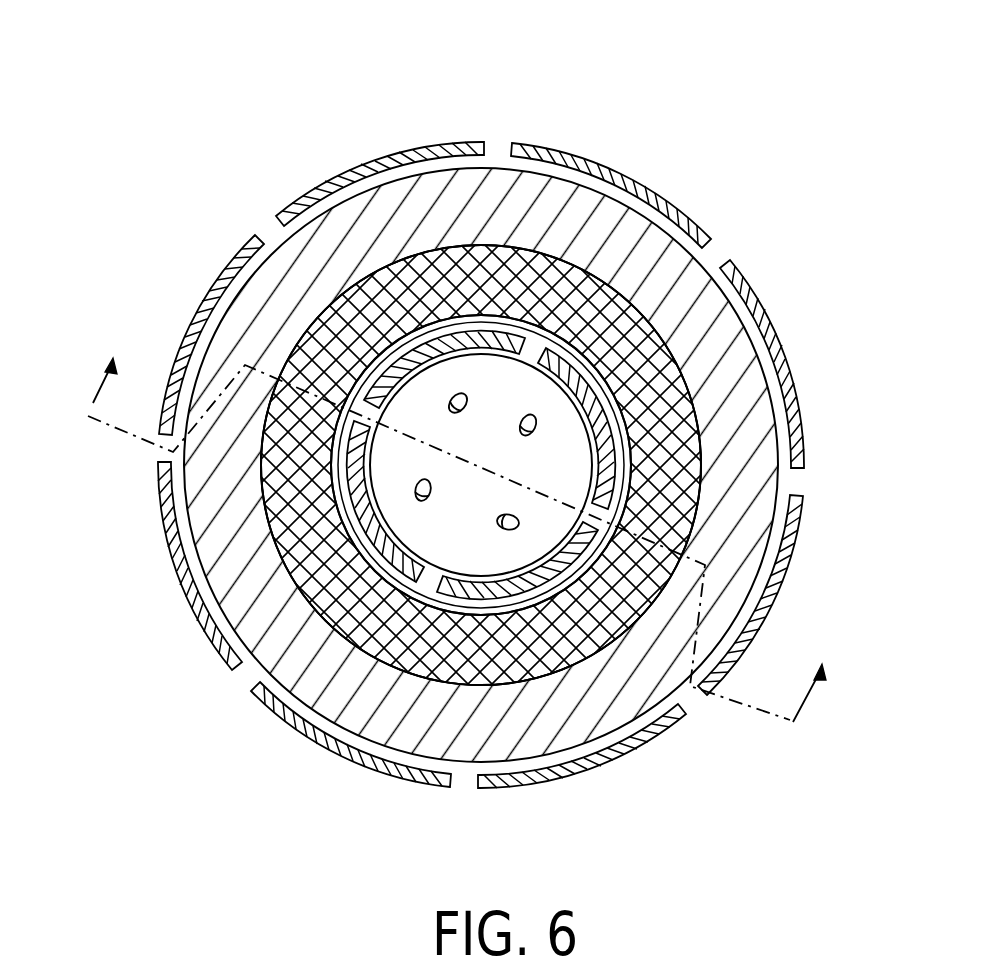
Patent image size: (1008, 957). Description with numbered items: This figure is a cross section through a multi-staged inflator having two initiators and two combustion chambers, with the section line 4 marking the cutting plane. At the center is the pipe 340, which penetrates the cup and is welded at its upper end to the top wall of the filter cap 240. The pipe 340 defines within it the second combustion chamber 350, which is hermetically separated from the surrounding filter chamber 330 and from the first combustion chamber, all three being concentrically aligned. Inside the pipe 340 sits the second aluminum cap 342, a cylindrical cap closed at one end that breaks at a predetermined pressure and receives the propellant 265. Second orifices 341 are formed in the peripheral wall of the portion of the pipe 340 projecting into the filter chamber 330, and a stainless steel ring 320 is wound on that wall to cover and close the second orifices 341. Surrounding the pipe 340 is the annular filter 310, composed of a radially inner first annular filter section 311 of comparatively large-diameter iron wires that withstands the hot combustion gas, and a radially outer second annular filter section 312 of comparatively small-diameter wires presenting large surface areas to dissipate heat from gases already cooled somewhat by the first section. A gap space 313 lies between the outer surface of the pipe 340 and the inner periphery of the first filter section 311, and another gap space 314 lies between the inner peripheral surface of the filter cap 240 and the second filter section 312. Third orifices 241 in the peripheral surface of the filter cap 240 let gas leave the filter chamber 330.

The section line 4- 4 is at (466, 518).
The filter cap 240 is at (220, 277).
The third orifices 241 is at (720, 255).
The propellant 265 is at (543, 418).
The filter 310 is at (665, 64).
The first annular filter section 311 is at (583, 278).
The second annular filter section 312 is at (520, 182).
The gap space 313 is at (700, 493).
The gap space 314 is at (463, 163).
The stainless steel ring 320 is at (405, 625).
The filter chamber 330 is at (512, 732).
The pipe 340 is at (343, 500).
The second orifices 341 is at (545, 345).
The second aluminum cap 342 is at (507, 572).
The second combustion chamber 350 is at (427, 408).